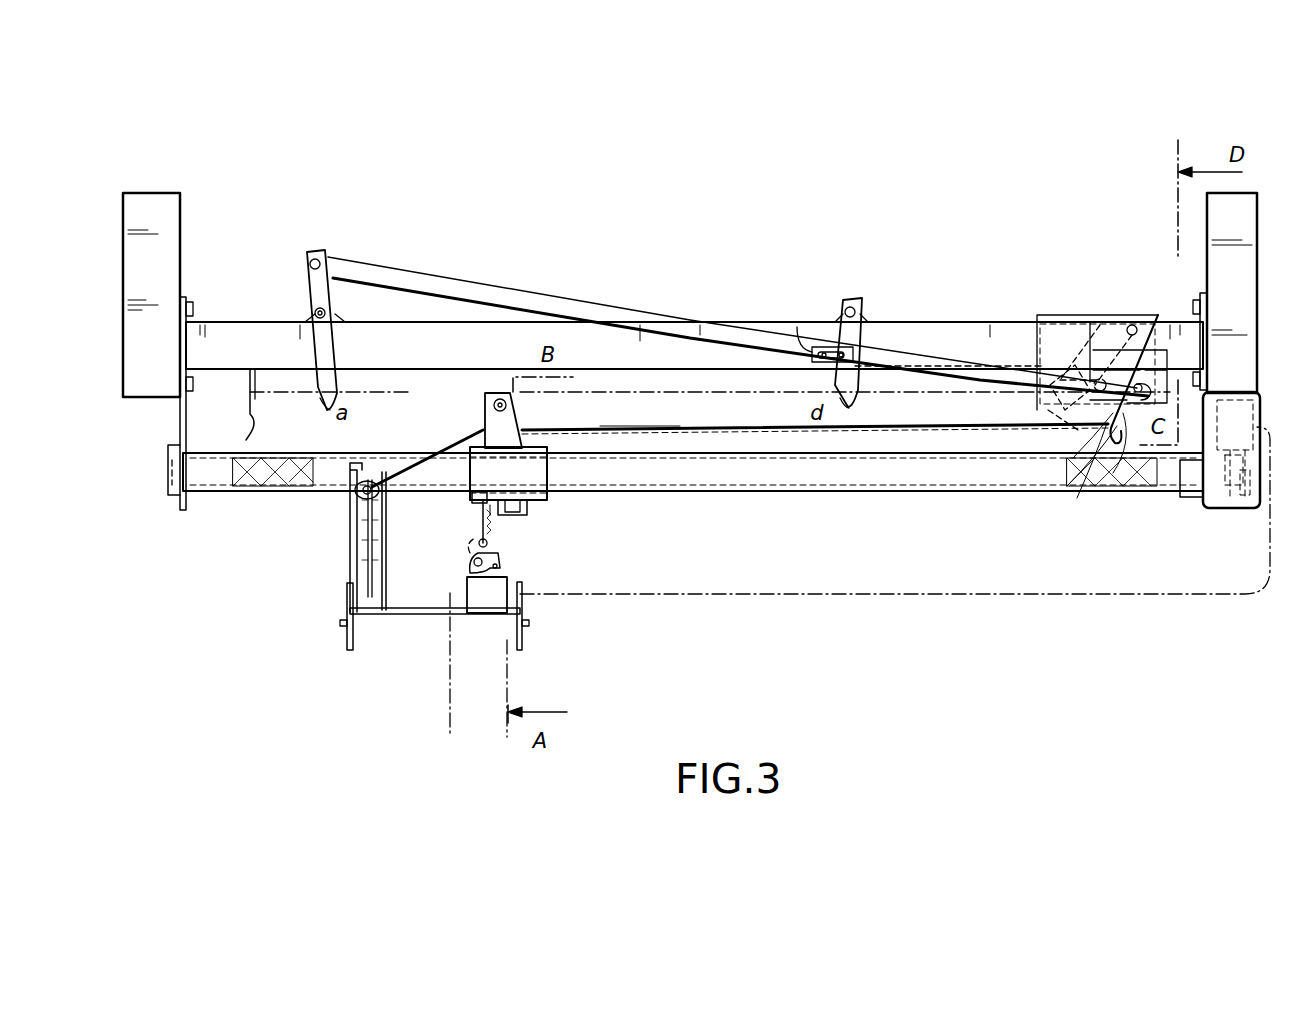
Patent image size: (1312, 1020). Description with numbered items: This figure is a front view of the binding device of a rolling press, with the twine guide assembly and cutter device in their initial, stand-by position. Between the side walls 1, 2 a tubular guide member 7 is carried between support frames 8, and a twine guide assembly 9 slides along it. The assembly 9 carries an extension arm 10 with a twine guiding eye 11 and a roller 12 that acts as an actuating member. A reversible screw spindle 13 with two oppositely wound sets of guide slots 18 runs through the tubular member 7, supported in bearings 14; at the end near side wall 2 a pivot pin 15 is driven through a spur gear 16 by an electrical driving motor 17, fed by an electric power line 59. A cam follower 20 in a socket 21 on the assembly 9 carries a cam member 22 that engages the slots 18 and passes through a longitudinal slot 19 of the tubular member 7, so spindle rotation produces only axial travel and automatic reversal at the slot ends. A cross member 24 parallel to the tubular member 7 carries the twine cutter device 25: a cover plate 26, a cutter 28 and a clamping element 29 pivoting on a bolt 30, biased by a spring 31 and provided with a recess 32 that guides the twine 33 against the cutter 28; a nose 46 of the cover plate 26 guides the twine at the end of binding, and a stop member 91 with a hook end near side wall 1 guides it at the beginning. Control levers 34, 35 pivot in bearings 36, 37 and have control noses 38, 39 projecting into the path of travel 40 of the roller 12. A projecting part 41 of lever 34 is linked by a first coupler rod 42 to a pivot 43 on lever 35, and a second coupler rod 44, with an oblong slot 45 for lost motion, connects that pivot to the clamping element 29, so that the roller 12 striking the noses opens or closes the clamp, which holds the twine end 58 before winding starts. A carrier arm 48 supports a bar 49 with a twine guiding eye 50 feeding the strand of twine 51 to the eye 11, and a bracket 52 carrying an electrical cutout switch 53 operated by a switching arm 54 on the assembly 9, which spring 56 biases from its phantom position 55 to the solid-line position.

The side wall 1 is at (122, 223).
The side wall 2 is at (1254, 261).
The tubular guide member 7 is at (672, 493).
The support frame 8 is at (180, 402).
The twine guide assembly 9 is at (535, 465).
The extension arm 10 is at (510, 422).
The twine guiding eye 11 is at (478, 420).
The roller 12 is at (487, 398).
The reversible screw spindle 13 is at (722, 492).
The bearing 14 is at (175, 495).
The pivot pin 15 is at (1218, 507).
The spur gear 16 is at (1232, 510).
The electrical driving motor 17 is at (1264, 397).
The guide slot 18 is at (295, 490).
The slot 19 is at (880, 488).
The cam follower 20 is at (527, 516).
The socket 21 is at (526, 512).
The cam member 22 is at (473, 507).
The cross member 24 is at (205, 328).
The twine cutter device 25 is at (1102, 295).
The cover plate 26 is at (1041, 320).
The cutter 28 is at (1040, 430).
The clamping element 29 is at (1114, 460).
The bolt 30 is at (1133, 325).
The spring 31 is at (1098, 380).
The recess 32 is at (1042, 412).
The twine 33 is at (766, 408).
The control lever 34 is at (326, 340).
The control lever 35 is at (830, 310).
The bearing 36 is at (314, 312).
The bearing 37 is at (853, 307).
The control nose 38 is at (324, 414).
The control nose 39 is at (850, 400).
The path of travel 40 is at (664, 396).
The projecting part 41 is at (306, 290).
The first coupler rod 42 is at (477, 290).
The pivot 43 is at (855, 355).
The second coupler rod 44 is at (930, 350).
The oblong slot 45 is at (822, 328).
The nose 46 is at (1105, 468).
The carrier arm 48 is at (345, 605).
The bar 49 is at (350, 561).
The twine guiding eye 50 is at (367, 481).
The strand of twine 51 is at (368, 578).
The bracket 52 is at (398, 616).
The electrical cutout switch 53 is at (485, 606).
The switching arm 54 is at (470, 557).
The phantom line position 55 is at (467, 534).
The spring 56 is at (492, 527).
The twine end 58 is at (1075, 480).
The electric power line 59 is at (448, 674).
The stop member 91 is at (248, 438).